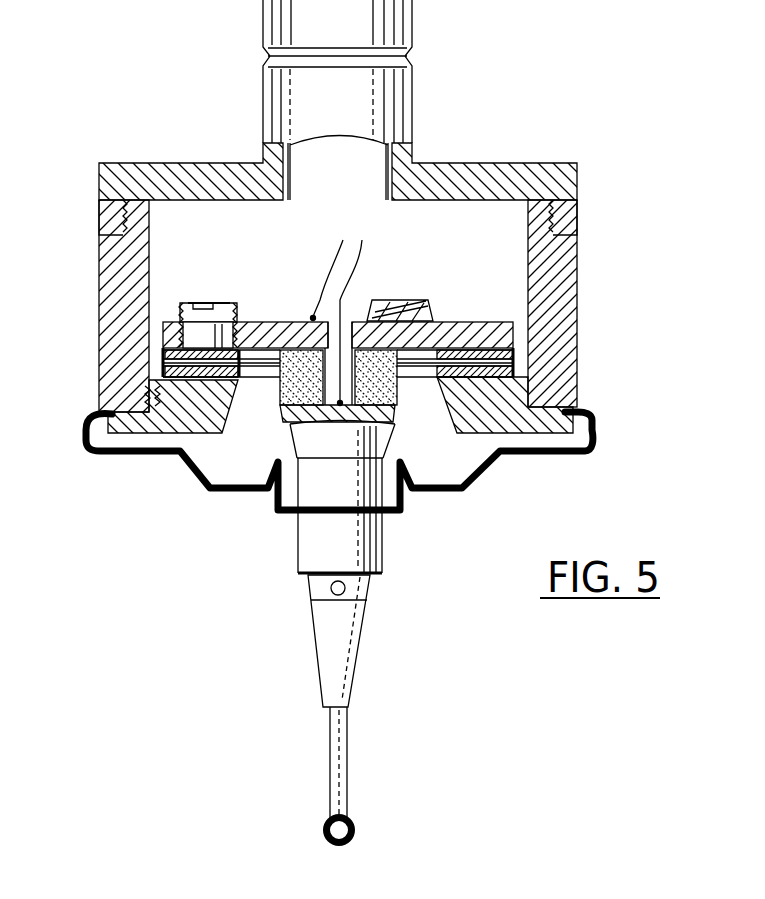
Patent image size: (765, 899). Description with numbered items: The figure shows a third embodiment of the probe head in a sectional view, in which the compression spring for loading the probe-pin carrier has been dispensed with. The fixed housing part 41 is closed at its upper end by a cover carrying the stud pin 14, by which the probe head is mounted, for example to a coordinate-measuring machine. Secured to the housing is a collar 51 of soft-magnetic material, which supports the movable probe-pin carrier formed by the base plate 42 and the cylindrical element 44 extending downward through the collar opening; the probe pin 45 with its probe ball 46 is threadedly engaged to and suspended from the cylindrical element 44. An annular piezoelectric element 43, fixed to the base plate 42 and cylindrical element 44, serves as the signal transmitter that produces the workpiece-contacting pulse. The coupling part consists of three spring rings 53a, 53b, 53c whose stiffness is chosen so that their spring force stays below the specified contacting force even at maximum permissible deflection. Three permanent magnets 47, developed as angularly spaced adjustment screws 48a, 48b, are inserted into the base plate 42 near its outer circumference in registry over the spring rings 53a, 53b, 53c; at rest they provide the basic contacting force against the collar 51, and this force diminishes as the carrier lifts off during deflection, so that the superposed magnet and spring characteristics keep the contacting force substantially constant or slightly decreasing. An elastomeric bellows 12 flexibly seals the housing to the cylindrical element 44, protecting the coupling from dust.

The elastomeric boot seal or bellows 12 is at (597, 446).
The stud pin 14 is at (397, 97).
The fixed housing part 41 is at (578, 248).
The base plate 42 is at (500, 322).
The piezoelectric element 43 is at (398, 388).
The cylindrical element 44 is at (377, 550).
The probe pin 45 is at (337, 747).
The probe ball 46 is at (353, 823).
The permanent magnets 47 is at (195, 322).
The adjustment screw 48a is at (215, 304).
The adjustment screw 48b is at (413, 299).
The collar 51 is at (147, 393).
The spring ring 53a is at (510, 350).
The spring ring 53b is at (511, 362).
The spring ring 53c is at (512, 372).